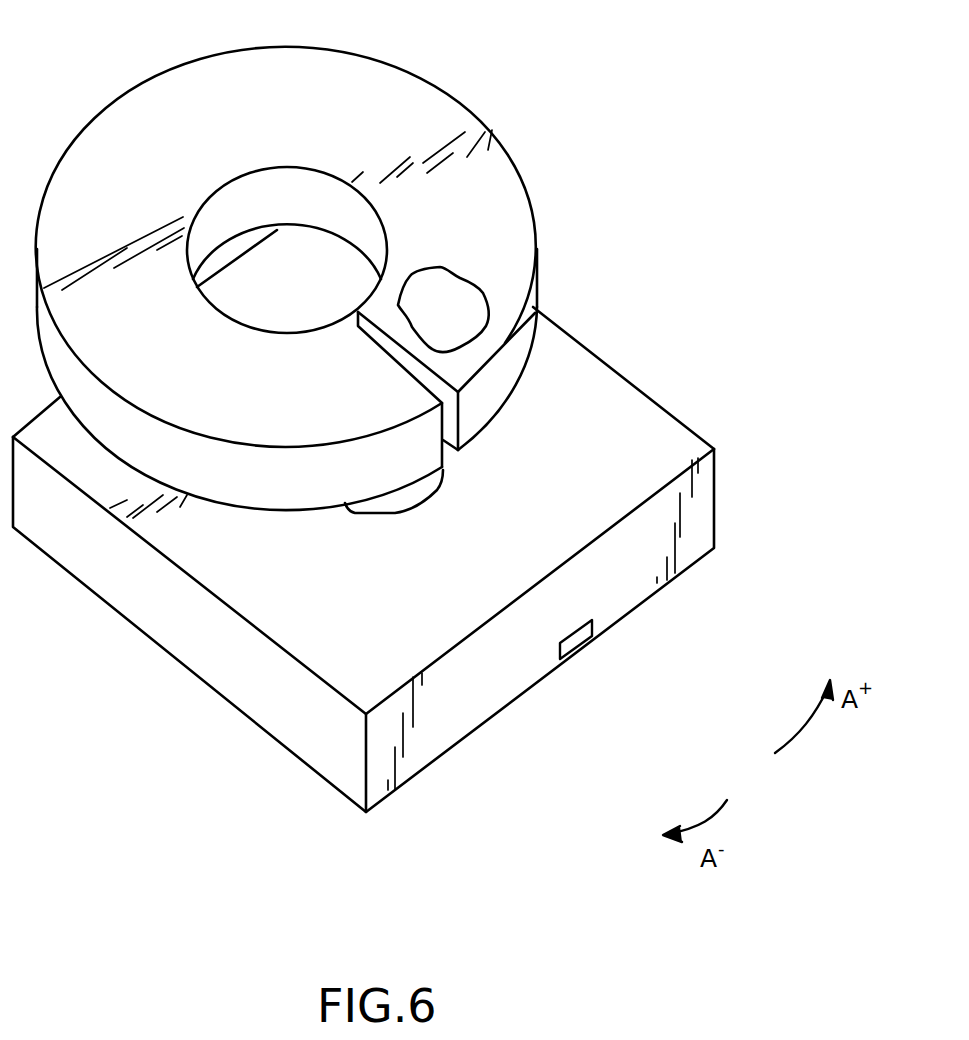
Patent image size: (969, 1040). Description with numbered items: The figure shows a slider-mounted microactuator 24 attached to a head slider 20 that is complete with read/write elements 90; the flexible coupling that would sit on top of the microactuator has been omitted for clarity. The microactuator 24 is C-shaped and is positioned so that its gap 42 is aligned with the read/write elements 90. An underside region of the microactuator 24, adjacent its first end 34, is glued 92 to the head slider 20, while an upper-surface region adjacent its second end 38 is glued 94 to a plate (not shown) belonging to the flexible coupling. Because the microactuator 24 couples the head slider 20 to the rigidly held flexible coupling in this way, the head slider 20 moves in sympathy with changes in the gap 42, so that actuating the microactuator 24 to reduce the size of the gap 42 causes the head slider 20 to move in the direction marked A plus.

The head slider 20 is at (670, 408).
The microactuator 24 is at (428, 148).
The first end 34 is at (363, 398).
The second end 38 is at (463, 370).
The gap 42 is at (452, 463).
The read/write elements 90 is at (578, 640).
The glue 92 is at (383, 507).
The glue 94 is at (450, 303).